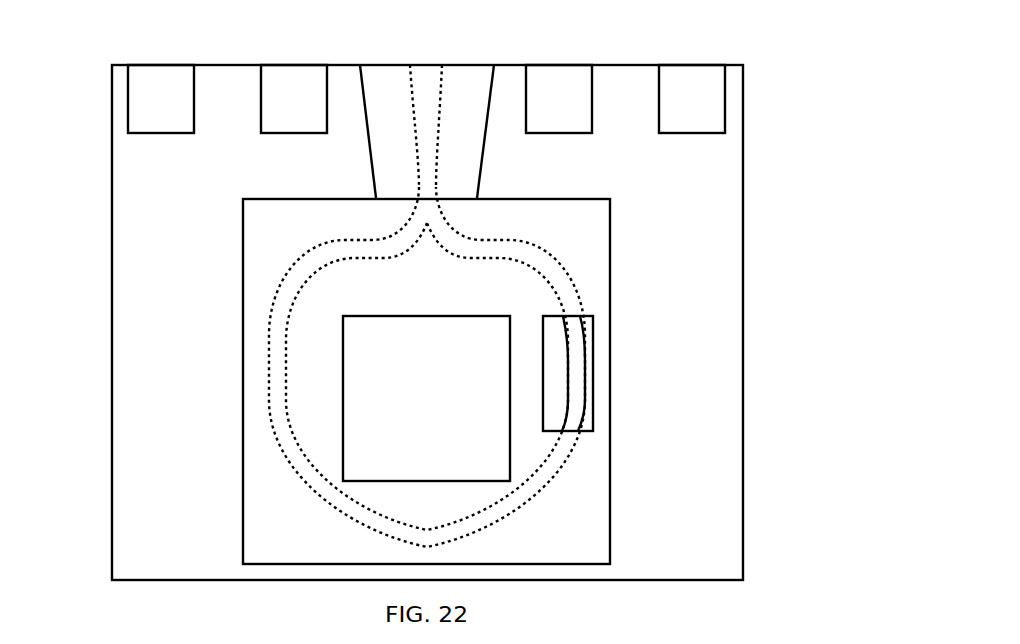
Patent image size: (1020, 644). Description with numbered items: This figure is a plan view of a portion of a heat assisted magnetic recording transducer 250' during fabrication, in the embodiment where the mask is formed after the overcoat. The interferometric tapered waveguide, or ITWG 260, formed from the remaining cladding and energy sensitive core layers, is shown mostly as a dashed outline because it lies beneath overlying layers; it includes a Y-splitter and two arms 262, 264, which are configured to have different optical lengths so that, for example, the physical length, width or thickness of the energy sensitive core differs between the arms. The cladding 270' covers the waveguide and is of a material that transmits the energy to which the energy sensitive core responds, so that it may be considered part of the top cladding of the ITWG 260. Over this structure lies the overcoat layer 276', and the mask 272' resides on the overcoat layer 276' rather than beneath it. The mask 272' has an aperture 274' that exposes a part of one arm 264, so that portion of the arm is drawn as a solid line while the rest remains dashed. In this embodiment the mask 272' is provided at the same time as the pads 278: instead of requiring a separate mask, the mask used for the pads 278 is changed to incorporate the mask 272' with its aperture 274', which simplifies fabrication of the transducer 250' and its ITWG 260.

The transducer 250' is at (417, 300).
The ITWG 260 is at (437, 168).
The arm 262 is at (227, 358).
The arm 264 is at (576, 498).
The cladding 270' is at (456, 322).
The mask 272' is at (332, 381).
The aperture 274' is at (670, 373).
The overcoat layer 276' is at (258, 131).
The pads 278 is at (706, 63).